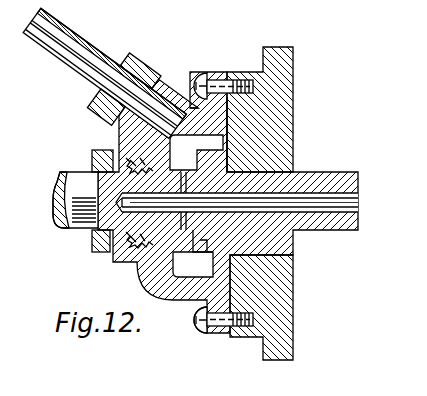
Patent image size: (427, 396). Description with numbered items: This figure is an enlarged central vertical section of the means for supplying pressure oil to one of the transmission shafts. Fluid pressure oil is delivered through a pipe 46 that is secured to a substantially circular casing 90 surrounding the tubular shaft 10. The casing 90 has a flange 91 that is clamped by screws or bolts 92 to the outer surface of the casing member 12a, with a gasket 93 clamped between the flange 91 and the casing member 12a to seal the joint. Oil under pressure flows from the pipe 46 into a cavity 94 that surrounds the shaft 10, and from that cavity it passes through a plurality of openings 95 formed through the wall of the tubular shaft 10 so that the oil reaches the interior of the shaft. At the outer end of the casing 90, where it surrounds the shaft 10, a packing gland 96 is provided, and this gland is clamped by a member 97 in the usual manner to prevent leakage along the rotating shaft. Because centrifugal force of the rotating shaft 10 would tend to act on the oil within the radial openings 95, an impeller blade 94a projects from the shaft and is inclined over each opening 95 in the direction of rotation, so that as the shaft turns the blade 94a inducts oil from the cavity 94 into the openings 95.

The pipe 46 is at (58, 56).
The tubular shaft 10 is at (307, 176).
The casing member 12a is at (291, 343).
The circular casing 90 is at (163, 288).
The flange 91 is at (217, 328).
The screws or bolts 92 is at (196, 331).
The gasket 93 is at (233, 328).
The cavity 94 is at (193, 224).
The impeller blade 94a is at (186, 169).
The openings 95 is at (193, 236).
The packing gland 96 is at (137, 247).
The clamping member 97 is at (92, 243).